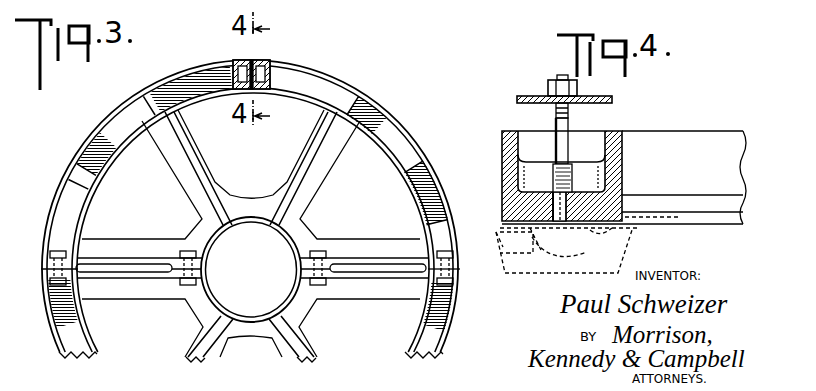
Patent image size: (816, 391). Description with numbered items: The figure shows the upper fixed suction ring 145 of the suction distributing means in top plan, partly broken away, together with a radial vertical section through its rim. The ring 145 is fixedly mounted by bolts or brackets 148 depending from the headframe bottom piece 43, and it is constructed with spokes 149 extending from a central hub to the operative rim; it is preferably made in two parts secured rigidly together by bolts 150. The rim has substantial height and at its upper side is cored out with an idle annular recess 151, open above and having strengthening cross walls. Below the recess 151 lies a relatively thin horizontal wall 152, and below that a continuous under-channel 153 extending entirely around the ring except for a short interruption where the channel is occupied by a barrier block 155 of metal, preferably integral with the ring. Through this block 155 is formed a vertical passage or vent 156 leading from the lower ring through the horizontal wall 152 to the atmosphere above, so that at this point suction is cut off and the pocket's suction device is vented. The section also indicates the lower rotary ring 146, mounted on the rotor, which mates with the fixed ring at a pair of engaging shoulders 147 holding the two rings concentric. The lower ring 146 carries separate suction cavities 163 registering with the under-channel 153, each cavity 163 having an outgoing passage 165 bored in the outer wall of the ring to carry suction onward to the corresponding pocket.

In FIG. 4, the headframe bottom piece 43 is at (539, 96).
In FIG. 3, the upper fixed suction ring 145 is at (406, 109).
In FIG. 4, the upper fixed suction ring 145 is at (701, 127).
In FIG. 4, the lower rotary ring 146 is at (543, 273).
In FIG. 4, the engaging shoulders 147 is at (641, 234).
In FIG. 4, the bolts or brackets 148 is at (572, 121).
In FIG. 3, the spokes 149 is at (164, 200).
In FIG. 3, the bolts 150 is at (321, 251).
In FIG. 3, the annular recess 151 is at (190, 74).
In FIG. 4, the annular recess 151 is at (552, 159).
In FIG. 3, the horizontal wall 152 is at (320, 86).
In FIG. 4, the horizontal wall 152 is at (588, 172).
In FIG. 3, the under-channel 153 is at (231, 76).
In FIG. 4, the under-channel 153 is at (530, 208).
In FIG. 3, the barrier block 155 is at (252, 60).
In FIG. 4, the barrier block 155 is at (623, 193).
In FIG. 3, the vertical passage or vent 156 is at (264, 81).
In FIG. 4, the vertical passage or vent 156 is at (559, 246).
In FIG. 4, the suction cavities 163 is at (596, 229).
In FIG. 4, the outgoing passage 165 is at (503, 249).